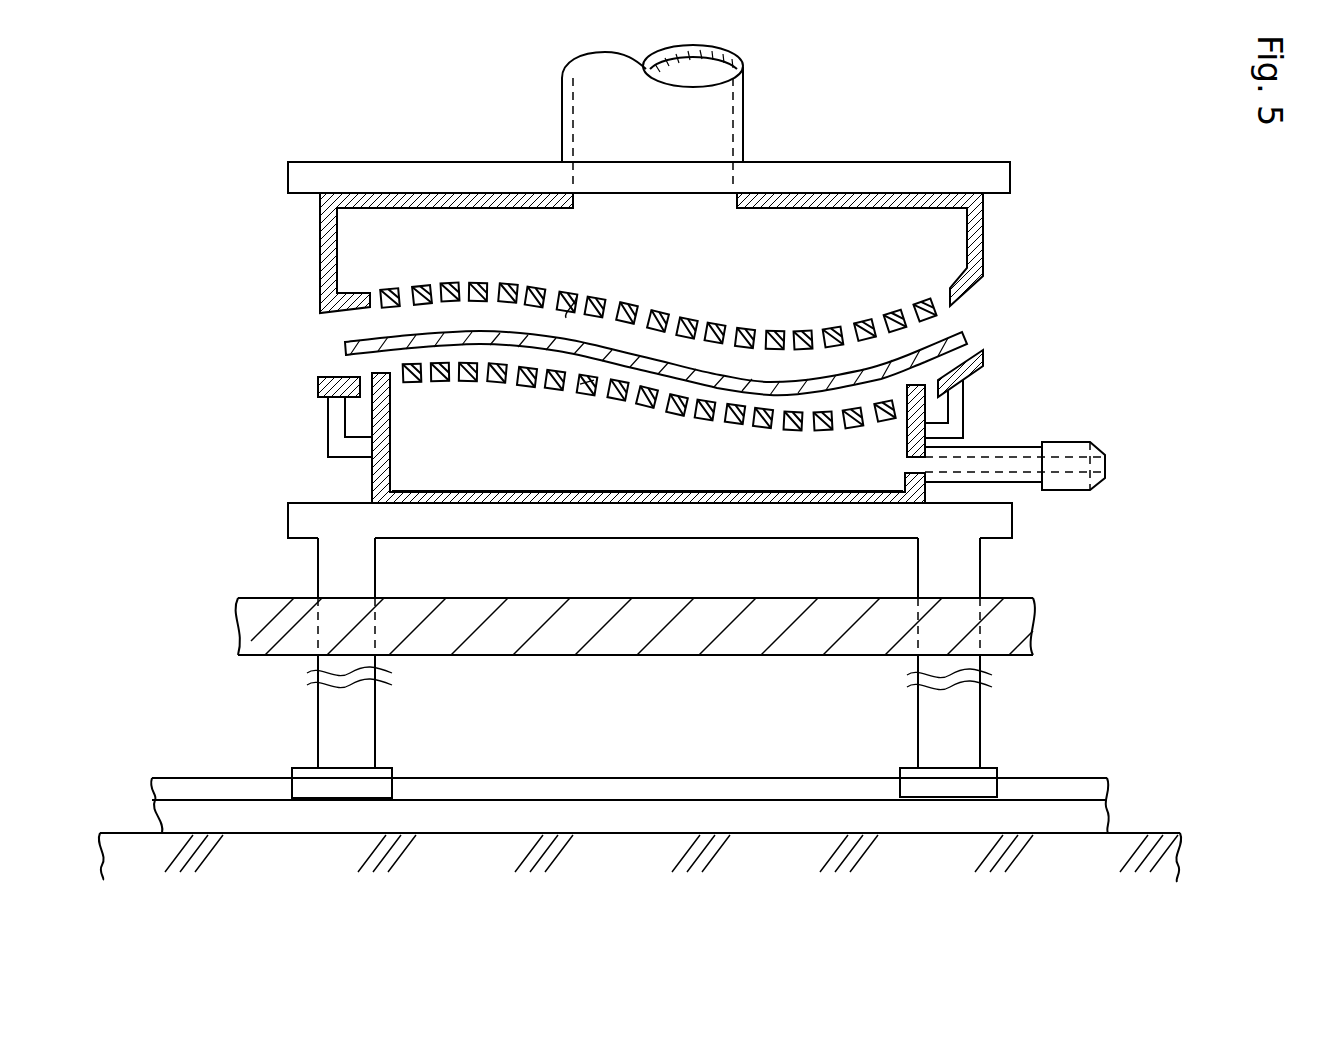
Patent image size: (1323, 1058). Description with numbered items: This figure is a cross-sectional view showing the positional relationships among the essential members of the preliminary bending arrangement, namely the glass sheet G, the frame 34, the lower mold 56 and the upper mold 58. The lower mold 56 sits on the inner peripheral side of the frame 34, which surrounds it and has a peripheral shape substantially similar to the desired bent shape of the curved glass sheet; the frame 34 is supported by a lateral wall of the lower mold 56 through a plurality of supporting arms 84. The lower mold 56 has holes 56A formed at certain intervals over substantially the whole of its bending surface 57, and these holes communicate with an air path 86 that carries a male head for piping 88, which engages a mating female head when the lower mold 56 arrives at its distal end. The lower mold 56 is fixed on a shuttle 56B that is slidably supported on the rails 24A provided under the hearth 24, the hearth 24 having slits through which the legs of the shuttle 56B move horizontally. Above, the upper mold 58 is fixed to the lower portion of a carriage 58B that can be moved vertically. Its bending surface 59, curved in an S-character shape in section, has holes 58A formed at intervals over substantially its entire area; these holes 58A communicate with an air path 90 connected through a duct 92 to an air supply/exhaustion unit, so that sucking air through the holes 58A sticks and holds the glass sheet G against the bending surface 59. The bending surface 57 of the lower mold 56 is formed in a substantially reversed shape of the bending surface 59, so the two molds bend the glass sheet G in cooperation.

The duct 92 is at (744, 122).
The carriage 58B is at (875, 172).
The upper mold 58 is at (985, 232).
The air path 90 is at (375, 247).
The holes 58A is at (680, 322).
The bending surface 59 is at (577, 296).
The glass sheet G is at (975, 338).
The frame 34 is at (318, 385).
The supporting arms 84 is at (328, 437).
The lower mold 56 is at (925, 420).
The holes 56A is at (488, 378).
The bending surface 57 is at (585, 385).
The air path 86 is at (597, 455).
The shuttle 56B is at (915, 548).
The hearth 24 is at (730, 645).
The rails 24A is at (792, 815).
The male head for piping 88 is at (1025, 448).